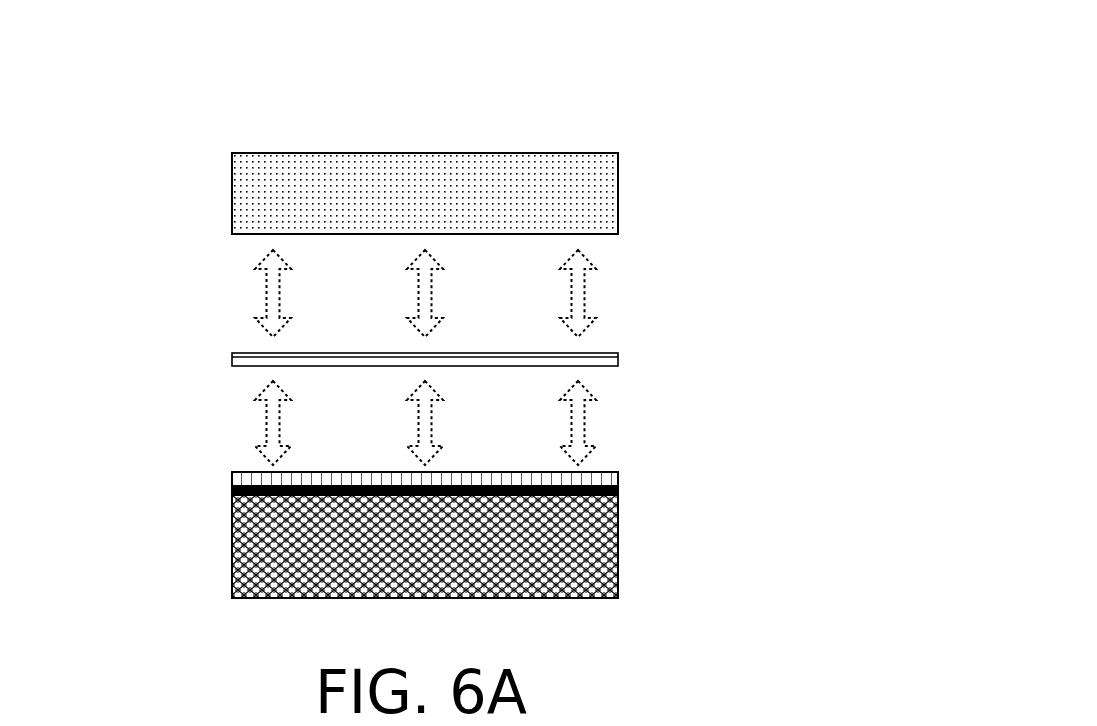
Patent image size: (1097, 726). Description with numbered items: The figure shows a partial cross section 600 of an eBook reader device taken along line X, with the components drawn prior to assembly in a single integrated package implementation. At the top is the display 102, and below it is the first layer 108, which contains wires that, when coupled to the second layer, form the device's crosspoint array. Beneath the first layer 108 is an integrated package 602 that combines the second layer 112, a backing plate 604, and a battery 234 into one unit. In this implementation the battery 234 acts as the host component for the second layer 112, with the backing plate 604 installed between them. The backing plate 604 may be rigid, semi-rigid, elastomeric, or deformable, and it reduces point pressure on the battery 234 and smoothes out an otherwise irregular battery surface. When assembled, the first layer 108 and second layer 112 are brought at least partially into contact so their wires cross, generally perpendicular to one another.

The cross section 600 is at (549, 108).
The display 102 is at (293, 203).
The first layer 108 is at (258, 359).
The second layer 112 is at (258, 477).
The integrated package 602 is at (429, 533).
The backing plate 604 is at (600, 493).
The battery 234 is at (555, 582).